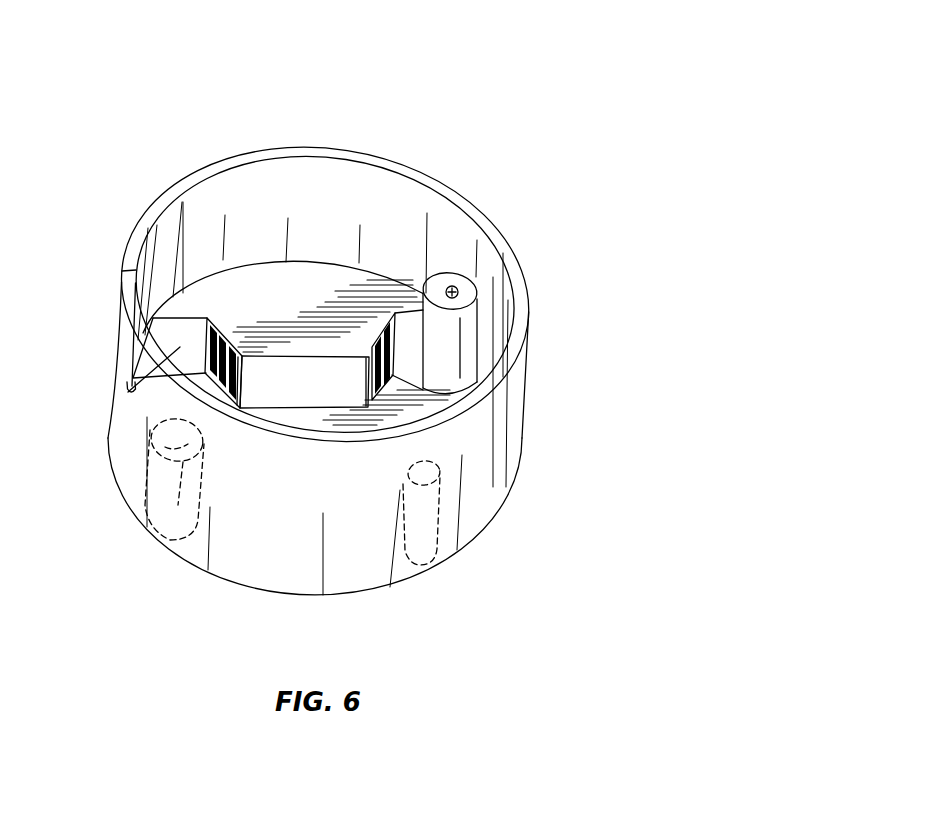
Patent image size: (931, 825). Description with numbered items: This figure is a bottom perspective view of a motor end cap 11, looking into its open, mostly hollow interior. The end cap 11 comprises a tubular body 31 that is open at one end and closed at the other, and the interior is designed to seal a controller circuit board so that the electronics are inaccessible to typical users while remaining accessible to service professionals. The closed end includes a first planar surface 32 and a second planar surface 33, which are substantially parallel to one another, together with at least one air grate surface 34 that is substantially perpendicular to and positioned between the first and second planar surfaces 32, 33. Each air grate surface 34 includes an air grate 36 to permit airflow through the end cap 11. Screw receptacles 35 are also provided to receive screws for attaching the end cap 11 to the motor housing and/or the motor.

The end cap 11 is at (496, 90).
The tubular body 31 is at (500, 400).
The first planar surface 32 is at (407, 407).
The second planar surface 33 is at (247, 303).
The air grate surface 34 is at (205, 371).
The screw receptacle 35 is at (423, 293).
The air grate 36 is at (225, 370).